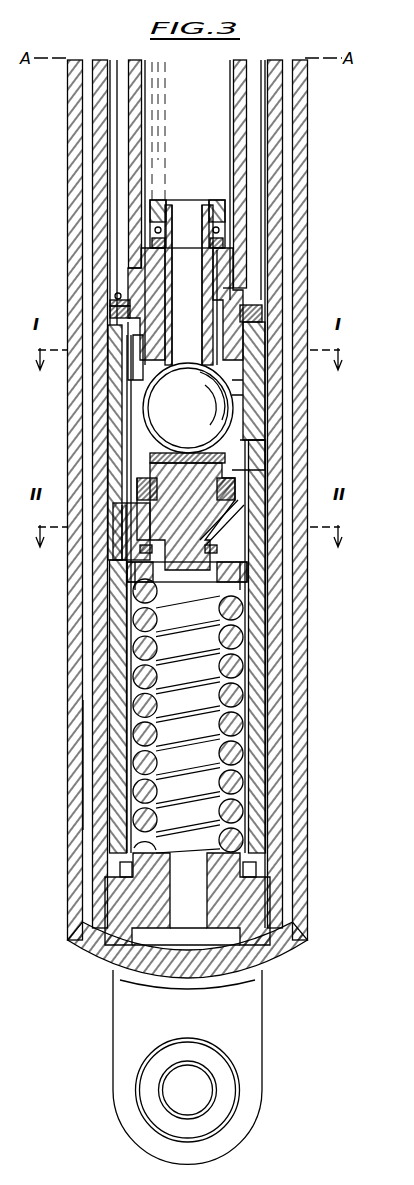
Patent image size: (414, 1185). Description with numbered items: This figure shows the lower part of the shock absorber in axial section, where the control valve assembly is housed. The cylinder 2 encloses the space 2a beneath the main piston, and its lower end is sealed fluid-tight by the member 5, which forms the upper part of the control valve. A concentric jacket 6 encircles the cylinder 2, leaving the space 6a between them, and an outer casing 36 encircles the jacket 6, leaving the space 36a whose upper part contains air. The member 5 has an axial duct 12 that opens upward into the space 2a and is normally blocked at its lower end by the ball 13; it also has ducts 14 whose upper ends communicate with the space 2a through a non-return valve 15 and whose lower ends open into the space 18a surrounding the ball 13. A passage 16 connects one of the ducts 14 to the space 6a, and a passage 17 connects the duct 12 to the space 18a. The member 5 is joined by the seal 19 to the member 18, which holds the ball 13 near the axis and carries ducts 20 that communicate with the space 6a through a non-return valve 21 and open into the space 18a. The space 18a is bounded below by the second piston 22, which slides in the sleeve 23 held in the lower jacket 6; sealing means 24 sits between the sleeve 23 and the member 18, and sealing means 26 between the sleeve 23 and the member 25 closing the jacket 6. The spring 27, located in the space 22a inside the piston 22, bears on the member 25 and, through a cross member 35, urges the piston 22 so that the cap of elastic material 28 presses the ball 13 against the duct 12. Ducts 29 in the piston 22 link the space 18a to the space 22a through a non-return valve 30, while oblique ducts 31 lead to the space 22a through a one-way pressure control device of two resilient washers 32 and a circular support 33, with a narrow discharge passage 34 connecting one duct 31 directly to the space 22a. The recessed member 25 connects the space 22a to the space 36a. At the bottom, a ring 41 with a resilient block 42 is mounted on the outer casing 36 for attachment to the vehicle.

The cylinder 2 is at (137, 105).
The space beneath the piston 2a is at (158, 70).
The member 5 is at (245, 280).
The jacket 6 is at (273, 67).
The space between the cylinder and the jacket 6a is at (253, 95).
The axial duct 12 is at (185, 215).
The ball 13 is at (196, 403).
The ducts 14 is at (213, 318).
The non-return valve 15 is at (228, 235).
The passage 16 is at (218, 272).
The passage 17 is at (162, 304).
The member 18 is at (250, 365).
The space surrounding the ball 18a is at (130, 450).
The seal 19 is at (140, 370).
The ducts 20 is at (112, 312).
The non-return valve 21 is at (120, 298).
The second piston 22 is at (235, 508).
The space inside the piston 22a is at (130, 690).
The sleeve 23 is at (258, 478).
The sealing means 24 is at (262, 395).
The member 25 is at (255, 905).
The sealing means 26 is at (262, 876).
The spring 27 is at (240, 605).
The cap of elastic material 28 is at (162, 452).
The ducts 29 is at (140, 520).
The non-return valve 30 is at (130, 500).
The oblique ducts 31 is at (237, 522).
The resilient washers 32 is at (150, 545).
The circular support 33 is at (187, 584).
The narrow discharge passage 34 is at (243, 540).
The cross member 35 is at (135, 580).
The outer casing 36 is at (300, 76).
The space encircling the jacket 36a is at (290, 760).
The ring 41 is at (255, 1075).
The resilient block 42 is at (190, 1050).